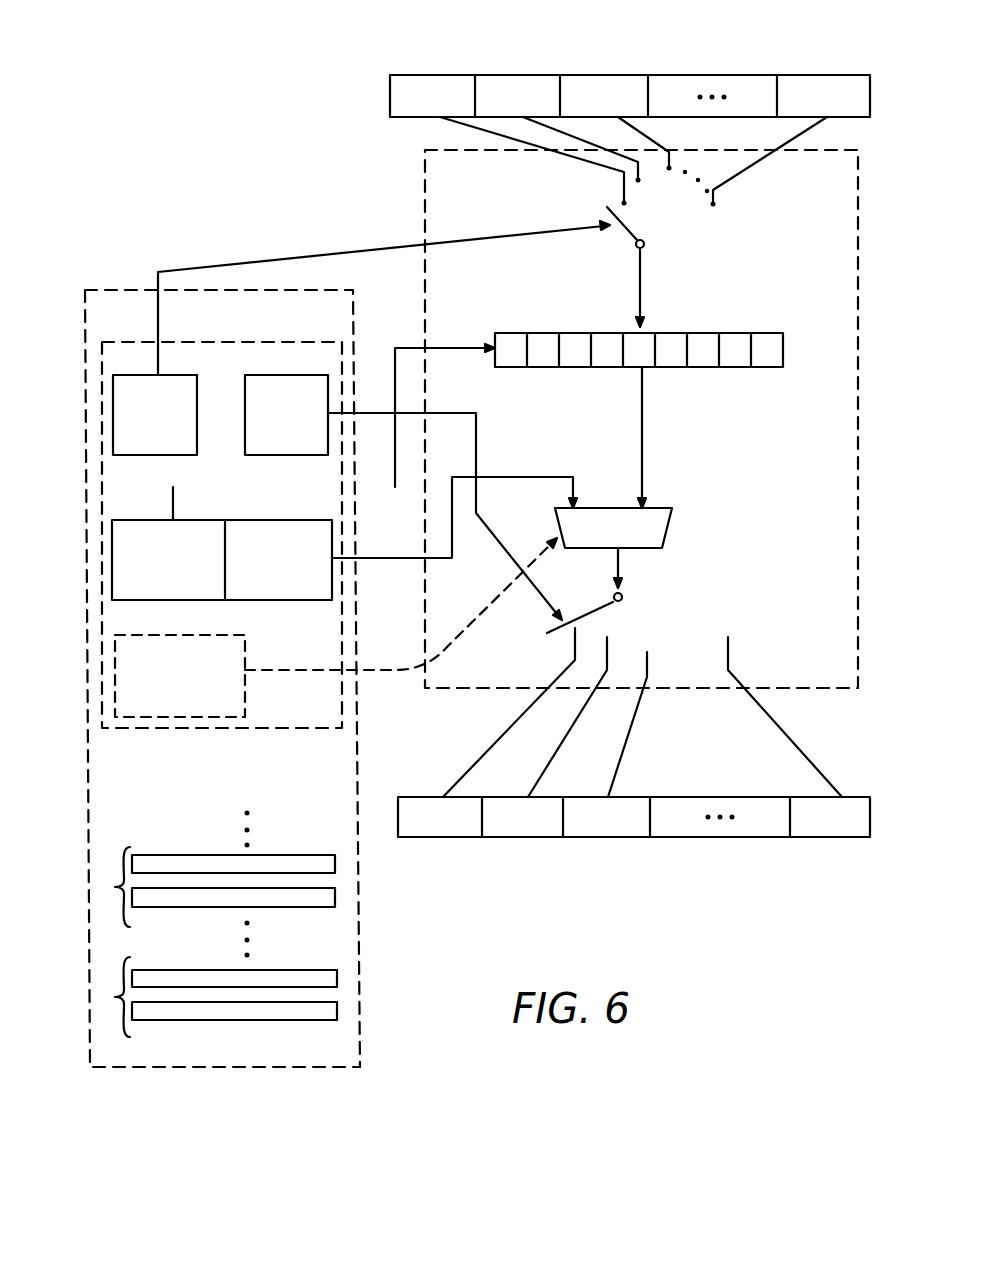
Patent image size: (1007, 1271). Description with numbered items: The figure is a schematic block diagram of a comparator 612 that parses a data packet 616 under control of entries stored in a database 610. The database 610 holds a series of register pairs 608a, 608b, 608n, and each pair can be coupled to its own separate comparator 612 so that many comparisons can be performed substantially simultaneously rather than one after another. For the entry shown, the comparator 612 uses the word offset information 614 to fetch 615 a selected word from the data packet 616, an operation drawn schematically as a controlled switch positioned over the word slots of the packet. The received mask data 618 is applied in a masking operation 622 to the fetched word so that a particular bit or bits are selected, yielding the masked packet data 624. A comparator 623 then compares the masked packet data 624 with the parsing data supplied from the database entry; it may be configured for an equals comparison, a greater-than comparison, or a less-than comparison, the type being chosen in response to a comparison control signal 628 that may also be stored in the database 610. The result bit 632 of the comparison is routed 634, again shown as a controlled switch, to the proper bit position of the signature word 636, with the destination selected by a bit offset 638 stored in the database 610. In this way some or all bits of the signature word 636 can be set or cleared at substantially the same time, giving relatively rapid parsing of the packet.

The data packet 616 is at (830, 75).
The word fetch 615 is at (646, 248).
The masking operation 622 is at (780, 345).
The masked packet data 624 is at (642, 420).
The comparator 623 is at (665, 517).
The result bit 632 is at (621, 556).
The routing 634 is at (623, 603).
The comparator 612 is at (849, 690).
The signature word 636 is at (805, 830).
The word offset information 614 is at (178, 375).
The bit offset 638 is at (283, 375).
The mask data 618 is at (158, 519).
The comparison control signal 628 is at (303, 673).
The pair of registers 608a is at (272, 730).
The pair of registers 608b is at (115, 887).
The pair of registers 608n is at (115, 997).
The database 610 is at (183, 1067).